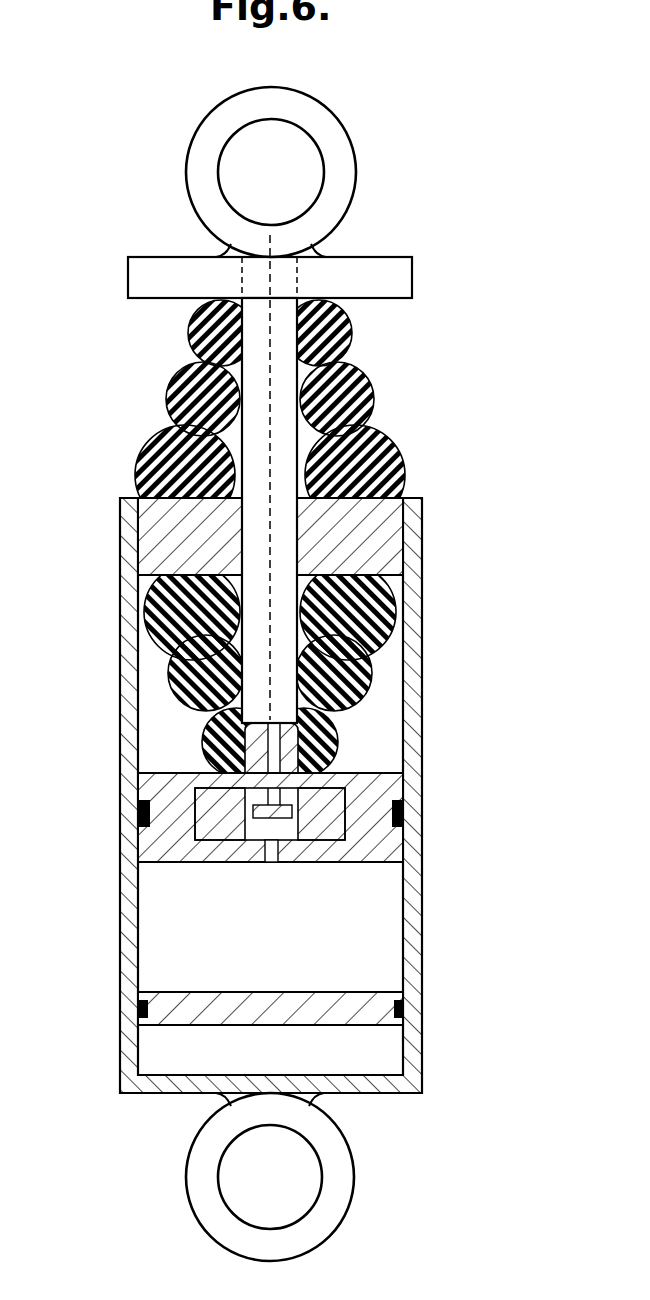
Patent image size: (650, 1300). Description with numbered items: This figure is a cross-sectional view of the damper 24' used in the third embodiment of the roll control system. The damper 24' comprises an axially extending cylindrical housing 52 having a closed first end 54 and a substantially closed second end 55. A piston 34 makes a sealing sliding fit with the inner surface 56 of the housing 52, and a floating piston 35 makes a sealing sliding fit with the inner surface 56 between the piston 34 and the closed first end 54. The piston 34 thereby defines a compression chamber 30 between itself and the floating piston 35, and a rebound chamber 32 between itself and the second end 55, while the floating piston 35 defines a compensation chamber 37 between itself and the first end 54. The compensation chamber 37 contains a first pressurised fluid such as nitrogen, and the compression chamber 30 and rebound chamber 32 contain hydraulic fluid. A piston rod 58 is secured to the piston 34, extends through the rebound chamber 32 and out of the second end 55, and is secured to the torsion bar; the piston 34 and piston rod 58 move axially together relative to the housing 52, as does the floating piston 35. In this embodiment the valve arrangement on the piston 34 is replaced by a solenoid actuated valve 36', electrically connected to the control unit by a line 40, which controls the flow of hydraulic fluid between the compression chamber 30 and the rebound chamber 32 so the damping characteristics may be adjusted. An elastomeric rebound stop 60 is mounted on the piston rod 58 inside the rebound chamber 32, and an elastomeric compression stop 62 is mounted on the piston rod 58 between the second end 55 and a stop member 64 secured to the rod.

The damper 24' is at (301, 674).
The compression chamber 30 is at (165, 927).
The rebound chamber 32 is at (148, 693).
The piston 34 is at (312, 818).
The floating piston 35 is at (388, 995).
The solenoid actuated valve 36' is at (337, 825).
The compensation chamber 37 is at (155, 1042).
The line 40 is at (258, 212).
The cylindrical housing 52 is at (122, 782).
The closed first end 54 is at (395, 1090).
The second end 55 is at (392, 532).
The inner surface 56 is at (403, 924).
The piston rod 58 is at (288, 352).
The rebound stop 60 is at (150, 599).
The compression stop 62 is at (392, 447).
The stop member 64 is at (140, 278).